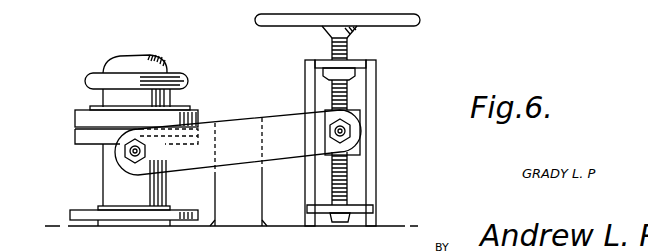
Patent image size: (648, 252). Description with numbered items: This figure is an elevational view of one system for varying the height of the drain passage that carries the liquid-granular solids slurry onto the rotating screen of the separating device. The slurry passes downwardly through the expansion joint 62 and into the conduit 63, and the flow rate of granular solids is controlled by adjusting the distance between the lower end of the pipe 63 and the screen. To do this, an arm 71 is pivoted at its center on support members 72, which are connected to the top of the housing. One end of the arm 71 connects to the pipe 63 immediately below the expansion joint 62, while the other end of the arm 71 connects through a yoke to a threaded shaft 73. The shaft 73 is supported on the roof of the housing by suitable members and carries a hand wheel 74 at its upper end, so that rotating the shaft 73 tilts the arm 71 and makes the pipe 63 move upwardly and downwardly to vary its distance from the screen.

The expansion joint 62 is at (88, 81).
The conduit 63 is at (106, 190).
The arm 71 is at (269, 120).
The support members 72 is at (243, 218).
The threaded shaft 73 is at (349, 50).
The hand wheel 74 is at (420, 20).